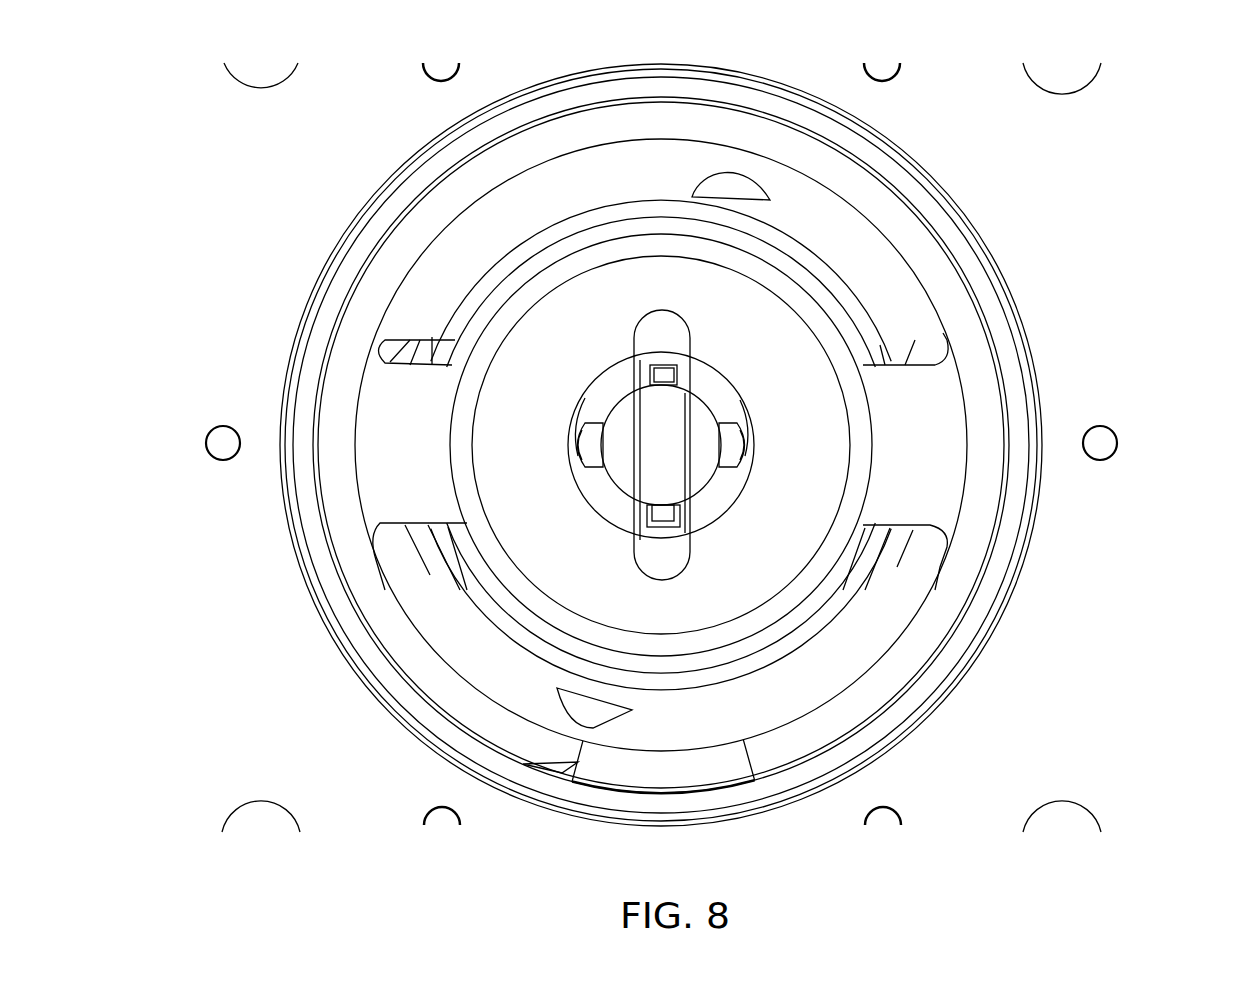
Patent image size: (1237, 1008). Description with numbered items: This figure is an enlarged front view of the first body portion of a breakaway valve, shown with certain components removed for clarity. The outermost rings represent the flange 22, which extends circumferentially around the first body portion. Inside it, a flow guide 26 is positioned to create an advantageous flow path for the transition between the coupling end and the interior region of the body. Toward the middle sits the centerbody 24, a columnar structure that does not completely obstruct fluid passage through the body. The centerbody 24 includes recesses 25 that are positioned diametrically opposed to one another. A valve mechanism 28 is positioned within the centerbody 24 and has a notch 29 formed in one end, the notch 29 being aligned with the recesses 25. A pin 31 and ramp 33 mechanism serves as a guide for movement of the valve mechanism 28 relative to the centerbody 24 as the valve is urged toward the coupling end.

The flange 22 is at (275, 219).
The centerbody 24 is at (542, 552).
The recesses 25 is at (652, 333).
The flow guide 26 is at (457, 642).
The valve mechanism 28 is at (697, 462).
The notch 29 is at (668, 418).
The pin 31 is at (665, 375).
The ramp 33 is at (735, 480).